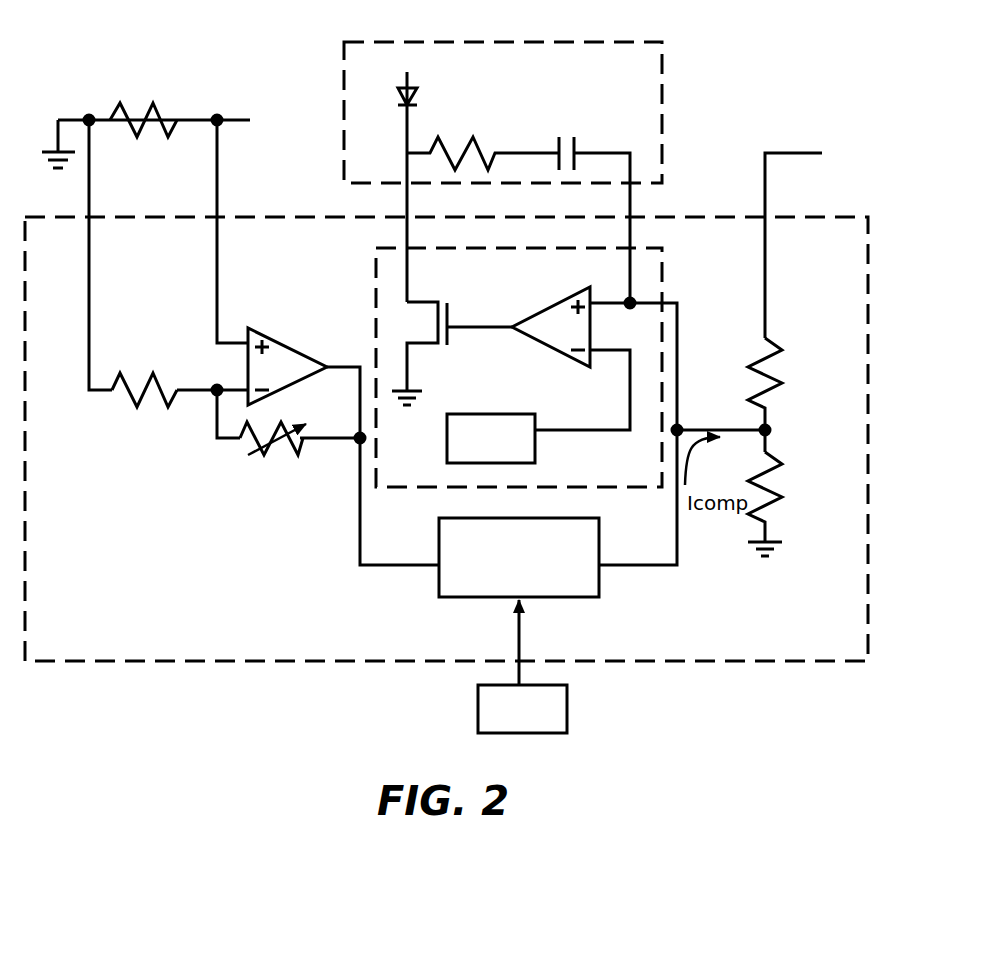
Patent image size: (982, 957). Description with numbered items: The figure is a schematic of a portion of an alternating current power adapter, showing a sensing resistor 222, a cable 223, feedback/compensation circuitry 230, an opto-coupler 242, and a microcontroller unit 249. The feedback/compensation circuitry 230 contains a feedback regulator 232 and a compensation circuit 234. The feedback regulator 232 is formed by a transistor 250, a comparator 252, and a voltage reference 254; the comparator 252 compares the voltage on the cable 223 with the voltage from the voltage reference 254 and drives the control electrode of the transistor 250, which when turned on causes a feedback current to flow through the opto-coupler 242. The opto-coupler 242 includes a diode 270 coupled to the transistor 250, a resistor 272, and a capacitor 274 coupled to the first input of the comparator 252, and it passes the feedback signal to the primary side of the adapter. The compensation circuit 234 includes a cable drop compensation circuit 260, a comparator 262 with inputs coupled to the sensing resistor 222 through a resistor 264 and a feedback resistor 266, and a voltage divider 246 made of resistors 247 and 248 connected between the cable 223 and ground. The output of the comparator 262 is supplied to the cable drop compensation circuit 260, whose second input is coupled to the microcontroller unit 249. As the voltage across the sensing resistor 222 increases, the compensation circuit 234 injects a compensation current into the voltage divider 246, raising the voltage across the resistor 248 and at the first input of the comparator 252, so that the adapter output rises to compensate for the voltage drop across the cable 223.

The sensing resistor 222 is at (158, 115).
The cable 223 is at (790, 153).
The feedback/compensation circuitry 230 is at (818, 567).
The feedback regulator 232 is at (662, 285).
The compensation circuit 234 is at (170, 519).
The opto-coupler 242 is at (575, 42).
The voltage divider 246 is at (779, 428).
The resistor 247 is at (770, 371).
The resistor 248 is at (770, 485).
The microcontroller unit (MCU) 249 is at (568, 708).
The transistor 250 is at (418, 302).
The comparator 252 is at (572, 295).
The voltage reference 254 is at (536, 422).
The cable drop compensation circuit 260 is at (600, 549).
The comparator 262 is at (290, 343).
The resistor 264 is at (165, 385).
The resistor 266 is at (285, 421).
The diode 270 is at (414, 90).
The resistor 272 is at (478, 140).
The capacitor 274 is at (578, 146).